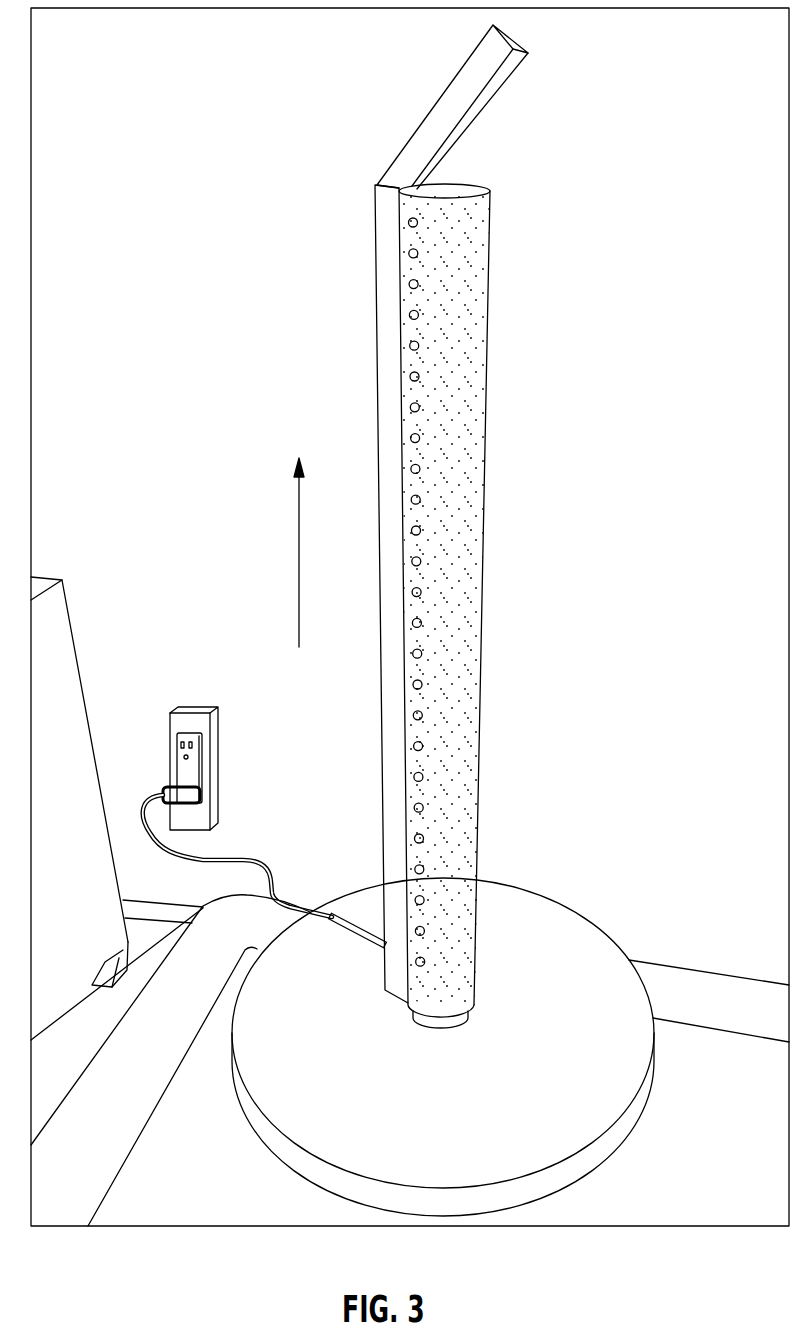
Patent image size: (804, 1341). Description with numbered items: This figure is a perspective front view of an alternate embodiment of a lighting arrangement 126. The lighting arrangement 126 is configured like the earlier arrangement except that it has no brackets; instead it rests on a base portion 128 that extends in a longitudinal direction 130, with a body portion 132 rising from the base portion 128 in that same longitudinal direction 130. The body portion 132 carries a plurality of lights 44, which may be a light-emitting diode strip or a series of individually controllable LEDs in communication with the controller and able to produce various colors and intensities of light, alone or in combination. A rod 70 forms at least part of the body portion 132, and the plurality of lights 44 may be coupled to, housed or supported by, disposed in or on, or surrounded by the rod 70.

The lighting arrangement 126 is at (196, 86).
The plurality of lights 44 is at (396, 253).
The rod 70 is at (467, 440).
The longitudinal direction 130 is at (299, 552).
The body portion 132 is at (443, 717).
The base portion 128 is at (598, 973).